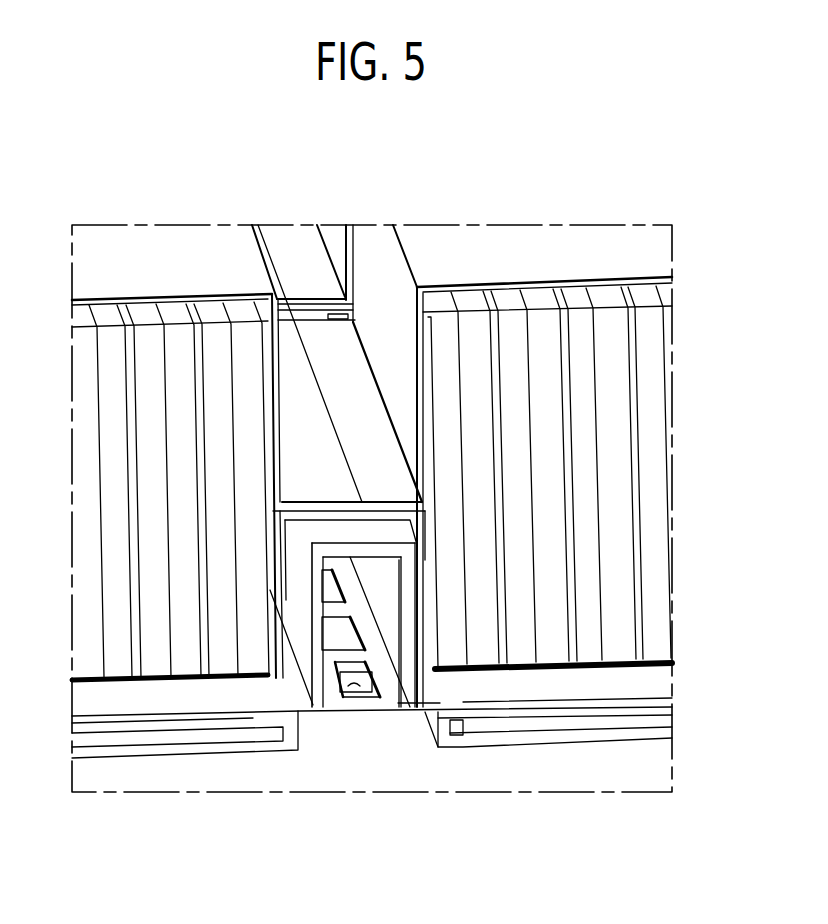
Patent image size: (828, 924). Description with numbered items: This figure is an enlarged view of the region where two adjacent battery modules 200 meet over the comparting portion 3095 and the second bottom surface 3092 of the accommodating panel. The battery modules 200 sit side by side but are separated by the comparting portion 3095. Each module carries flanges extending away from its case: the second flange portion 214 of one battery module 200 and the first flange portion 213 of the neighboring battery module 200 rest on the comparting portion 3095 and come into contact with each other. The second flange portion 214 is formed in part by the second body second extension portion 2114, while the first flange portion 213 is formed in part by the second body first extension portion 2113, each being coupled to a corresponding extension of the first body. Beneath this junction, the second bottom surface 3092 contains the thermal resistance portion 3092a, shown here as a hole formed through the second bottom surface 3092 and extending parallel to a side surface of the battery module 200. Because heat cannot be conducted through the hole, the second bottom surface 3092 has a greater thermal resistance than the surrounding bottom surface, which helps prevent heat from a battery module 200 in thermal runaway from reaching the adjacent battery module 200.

The battery module 200 is at (210, 248).
The second body second extension portion 2114 is at (261, 605).
The second flange portion 214 is at (303, 480).
The second body first extension portion 2113 is at (411, 601).
The first flange portion 213 is at (380, 480).
The second bottom surface 3092 is at (335, 700).
The thermal resistance portion 3092a is at (362, 692).
The comparting portion 3095 is at (440, 687).